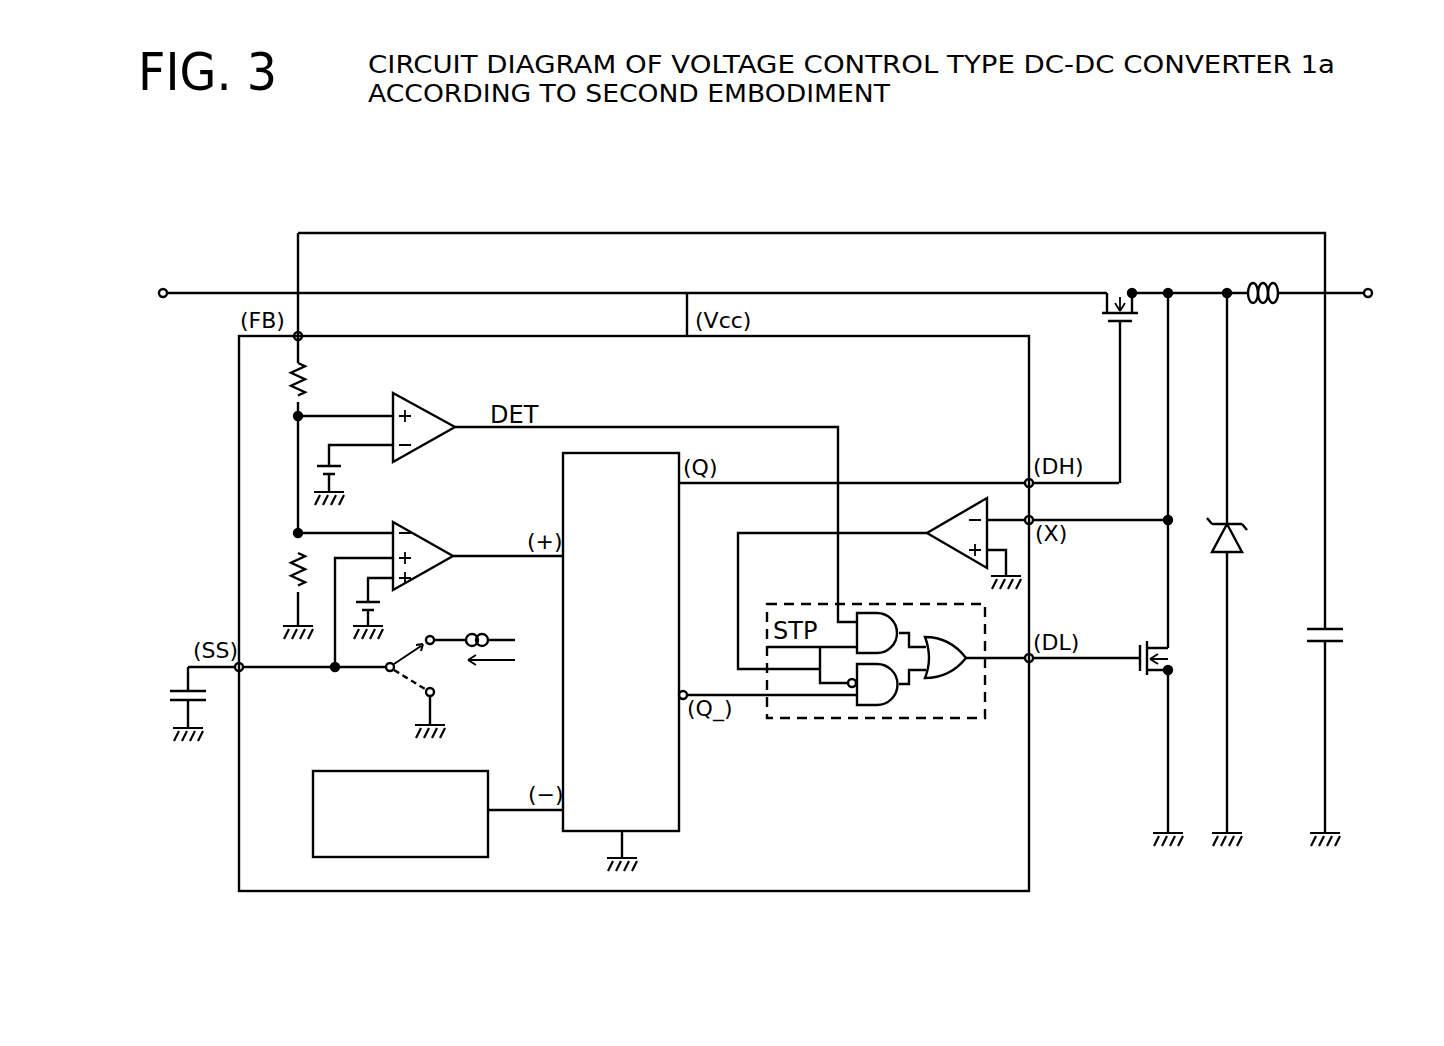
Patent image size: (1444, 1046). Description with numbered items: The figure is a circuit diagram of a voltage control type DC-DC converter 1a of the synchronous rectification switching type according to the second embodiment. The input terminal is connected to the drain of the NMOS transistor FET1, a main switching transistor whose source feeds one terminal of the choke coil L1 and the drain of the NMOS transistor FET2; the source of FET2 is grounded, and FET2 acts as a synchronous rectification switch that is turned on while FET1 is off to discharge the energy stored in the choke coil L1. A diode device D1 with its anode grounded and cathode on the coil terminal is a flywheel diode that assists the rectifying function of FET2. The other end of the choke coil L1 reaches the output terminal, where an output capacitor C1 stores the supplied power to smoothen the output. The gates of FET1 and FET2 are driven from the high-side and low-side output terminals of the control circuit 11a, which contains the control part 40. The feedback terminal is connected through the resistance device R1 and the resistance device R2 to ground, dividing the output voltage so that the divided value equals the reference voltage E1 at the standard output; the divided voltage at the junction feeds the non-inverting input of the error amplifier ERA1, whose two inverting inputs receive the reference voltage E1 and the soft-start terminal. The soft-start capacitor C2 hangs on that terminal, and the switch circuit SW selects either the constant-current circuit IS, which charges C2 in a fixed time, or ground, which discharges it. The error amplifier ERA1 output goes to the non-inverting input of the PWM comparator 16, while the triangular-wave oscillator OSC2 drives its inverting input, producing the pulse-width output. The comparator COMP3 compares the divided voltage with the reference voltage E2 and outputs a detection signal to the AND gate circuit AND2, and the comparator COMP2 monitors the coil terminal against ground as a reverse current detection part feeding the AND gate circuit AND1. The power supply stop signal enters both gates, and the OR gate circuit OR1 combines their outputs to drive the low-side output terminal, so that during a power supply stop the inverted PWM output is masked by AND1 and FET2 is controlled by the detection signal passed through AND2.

The voltage control type DC-DC converter 1a is at (1090, 218).
The control circuit 11a is at (1029, 840).
The PWM comparator 16 is at (680, 774).
The control part 40 is at (896, 693).
The resistance device R1 is at (280, 380).
The resistance device R2 is at (284, 596).
The comparator COMP3 is at (430, 416).
The comparator COMP2 is at (948, 527).
The error amplifier ERA1 is at (428, 548).
The reference voltage E1 is at (372, 610).
The reference voltage E2 is at (333, 476).
The capacitor C2 is at (180, 694).
The switch circuit SW is at (380, 672).
The constant-current circuit IS is at (480, 637).
The triangular-wave oscillator OSC2 is at (488, 771).
The AND gate circuit AND1 is at (876, 707).
The AND gate circuit AND2 is at (882, 614).
The OR gate circuit OR1 is at (947, 670).
The NMOS transistor FET1 is at (1089, 371).
The NMOS transistor FET2 is at (1108, 567).
The diode device D1 is at (1240, 536).
The choke coil L1 is at (1263, 277).
The output capacitor C1 is at (1308, 634).